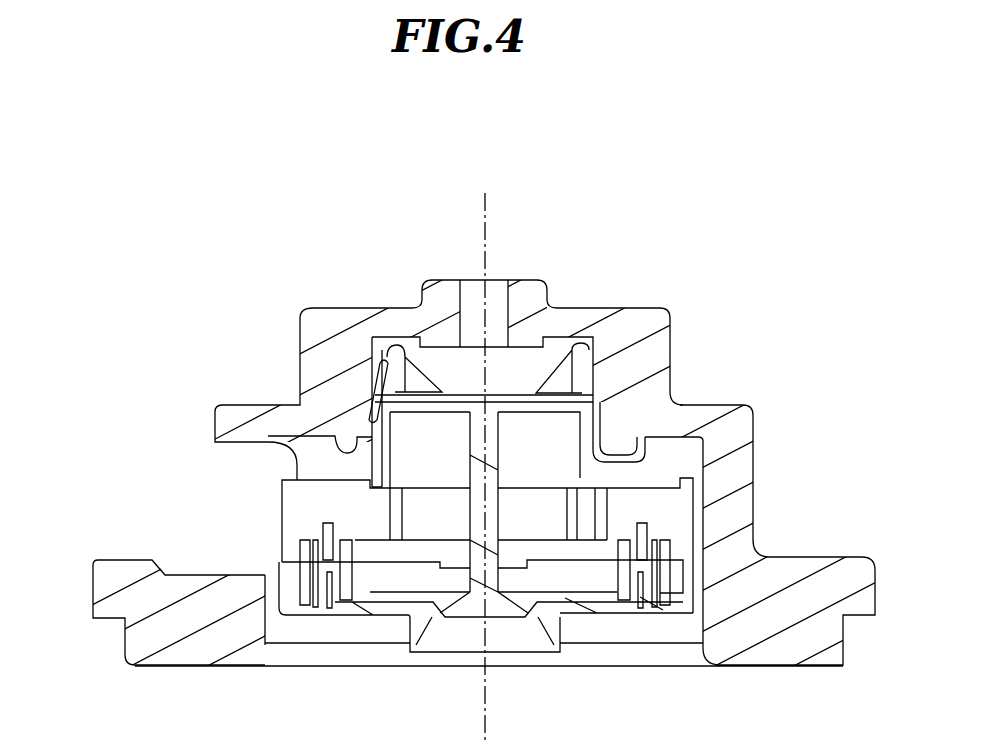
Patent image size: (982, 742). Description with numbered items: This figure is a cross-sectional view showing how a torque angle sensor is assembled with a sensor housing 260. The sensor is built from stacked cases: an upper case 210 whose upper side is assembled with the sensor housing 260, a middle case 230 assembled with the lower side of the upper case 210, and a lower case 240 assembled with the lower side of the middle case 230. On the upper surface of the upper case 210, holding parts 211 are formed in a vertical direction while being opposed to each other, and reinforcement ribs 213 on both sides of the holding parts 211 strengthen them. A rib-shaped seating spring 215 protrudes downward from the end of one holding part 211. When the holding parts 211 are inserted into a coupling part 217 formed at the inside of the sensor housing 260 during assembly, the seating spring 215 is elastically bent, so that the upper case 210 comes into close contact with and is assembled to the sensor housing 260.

The upper case 210 is at (660, 368).
The holding part 211 is at (383, 347).
The reinforcement rib 213 is at (553, 365).
The seating spring 215 is at (378, 382).
The coupling part 217 is at (375, 410).
The middle case 230 is at (293, 505).
The lower case 240 is at (297, 602).
The sensor housing 260 is at (742, 470).